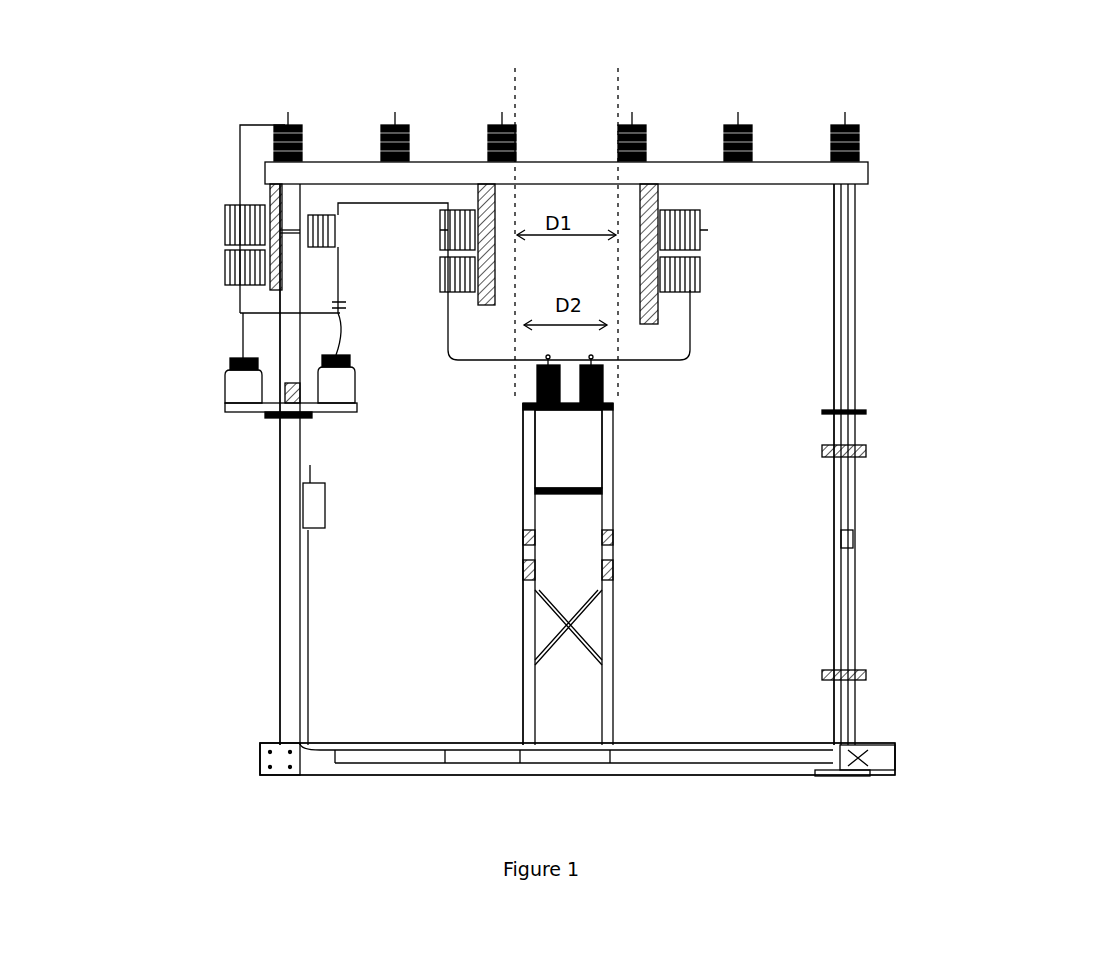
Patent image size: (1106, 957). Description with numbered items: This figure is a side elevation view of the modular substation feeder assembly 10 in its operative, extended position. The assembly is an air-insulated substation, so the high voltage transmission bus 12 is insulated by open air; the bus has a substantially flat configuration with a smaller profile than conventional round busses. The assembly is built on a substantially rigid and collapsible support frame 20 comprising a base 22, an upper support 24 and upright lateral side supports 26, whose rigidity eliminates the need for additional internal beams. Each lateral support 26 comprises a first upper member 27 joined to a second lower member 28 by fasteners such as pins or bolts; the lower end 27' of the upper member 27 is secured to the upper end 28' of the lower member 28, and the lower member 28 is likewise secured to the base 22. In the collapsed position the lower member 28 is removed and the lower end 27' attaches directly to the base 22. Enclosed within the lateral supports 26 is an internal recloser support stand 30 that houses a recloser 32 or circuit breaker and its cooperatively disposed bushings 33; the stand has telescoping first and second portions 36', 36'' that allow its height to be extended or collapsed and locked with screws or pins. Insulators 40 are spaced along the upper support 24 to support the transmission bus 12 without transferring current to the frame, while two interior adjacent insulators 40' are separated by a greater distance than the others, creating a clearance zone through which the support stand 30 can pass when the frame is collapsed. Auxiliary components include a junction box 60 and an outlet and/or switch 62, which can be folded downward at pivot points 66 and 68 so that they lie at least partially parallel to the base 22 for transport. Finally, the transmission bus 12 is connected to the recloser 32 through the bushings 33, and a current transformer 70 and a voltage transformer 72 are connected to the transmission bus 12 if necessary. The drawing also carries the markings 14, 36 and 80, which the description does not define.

The modular substation feeder assembly 10 is at (975, 106).
The high voltage transmission bus 12 is at (240, 150).
The mounting bracket 14 is at (834, 398).
The support frame 20 is at (893, 188).
The base 22 is at (775, 772).
The upper support 24 is at (775, 172).
The lateral side support 26 is at (958, 385).
The first upper member 27 is at (559, 464).
The lower end of upper member 27' is at (871, 379).
The second lower member 28 is at (567, 464).
The upper end of lower member 28' is at (807, 436).
The internal recloser support stand 30 is at (632, 508).
The recloser 32 is at (580, 456).
The bushings 33 is at (530, 385).
The brace block 36 is at (612, 555).
The first portion of support stand 36' is at (484, 574).
The second portion of support stand 36'' is at (513, 627).
The insulators 40 is at (558, 109).
The interior adjacent insulators 40' is at (576, 112).
The junction box 60 is at (315, 505).
The outlet and/or switch 62 is at (855, 545).
The pivot point 66 is at (310, 758).
The pivot point 68 is at (870, 775).
The current transformer 70 is at (235, 390).
The voltage transformer 72 is at (342, 397).
The center line spacing 80 is at (568, 82).